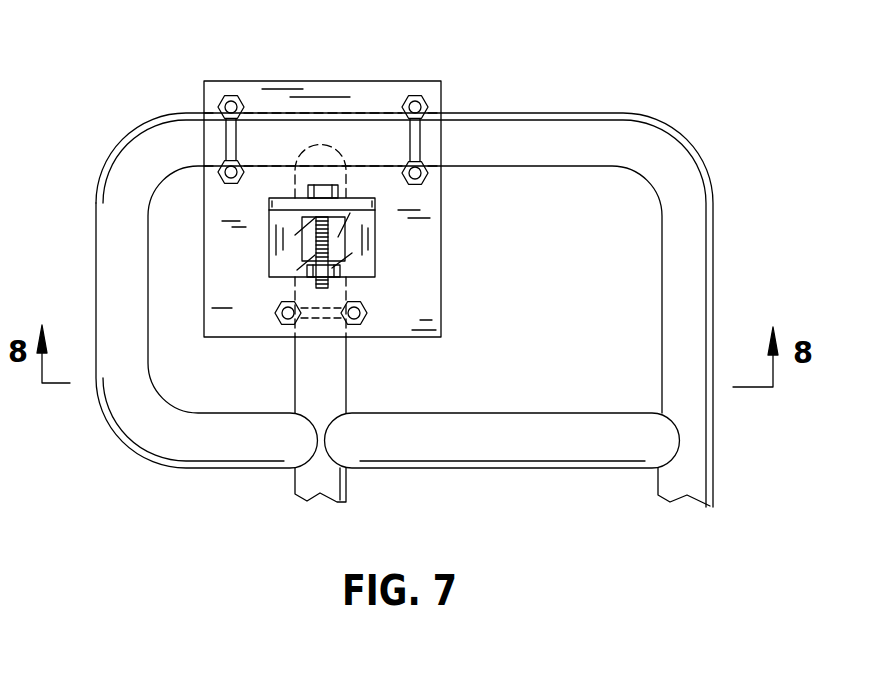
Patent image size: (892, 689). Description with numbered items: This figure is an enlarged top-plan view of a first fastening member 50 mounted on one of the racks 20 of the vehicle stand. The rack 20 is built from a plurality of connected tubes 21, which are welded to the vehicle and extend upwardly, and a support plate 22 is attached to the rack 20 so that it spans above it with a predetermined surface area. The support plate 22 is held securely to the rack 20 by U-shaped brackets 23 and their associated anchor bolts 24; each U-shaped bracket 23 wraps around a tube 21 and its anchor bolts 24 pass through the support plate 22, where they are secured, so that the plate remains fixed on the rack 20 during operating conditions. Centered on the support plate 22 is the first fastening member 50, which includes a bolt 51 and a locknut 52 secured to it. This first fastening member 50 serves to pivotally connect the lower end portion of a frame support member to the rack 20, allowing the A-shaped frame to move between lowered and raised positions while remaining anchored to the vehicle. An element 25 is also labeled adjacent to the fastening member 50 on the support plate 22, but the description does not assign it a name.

The rack 20 is at (666, 80).
The connected tubes 21 is at (302, 258).
The support plate 22 is at (441, 285).
The U-shaped bracket 23 is at (422, 148).
The anchor bolt 24 is at (232, 94).
The clamp block flange 25 is at (375, 240).
The first fastening member 50 is at (331, 160).
The bolt 51 is at (308, 188).
The locknut 52 is at (306, 273).